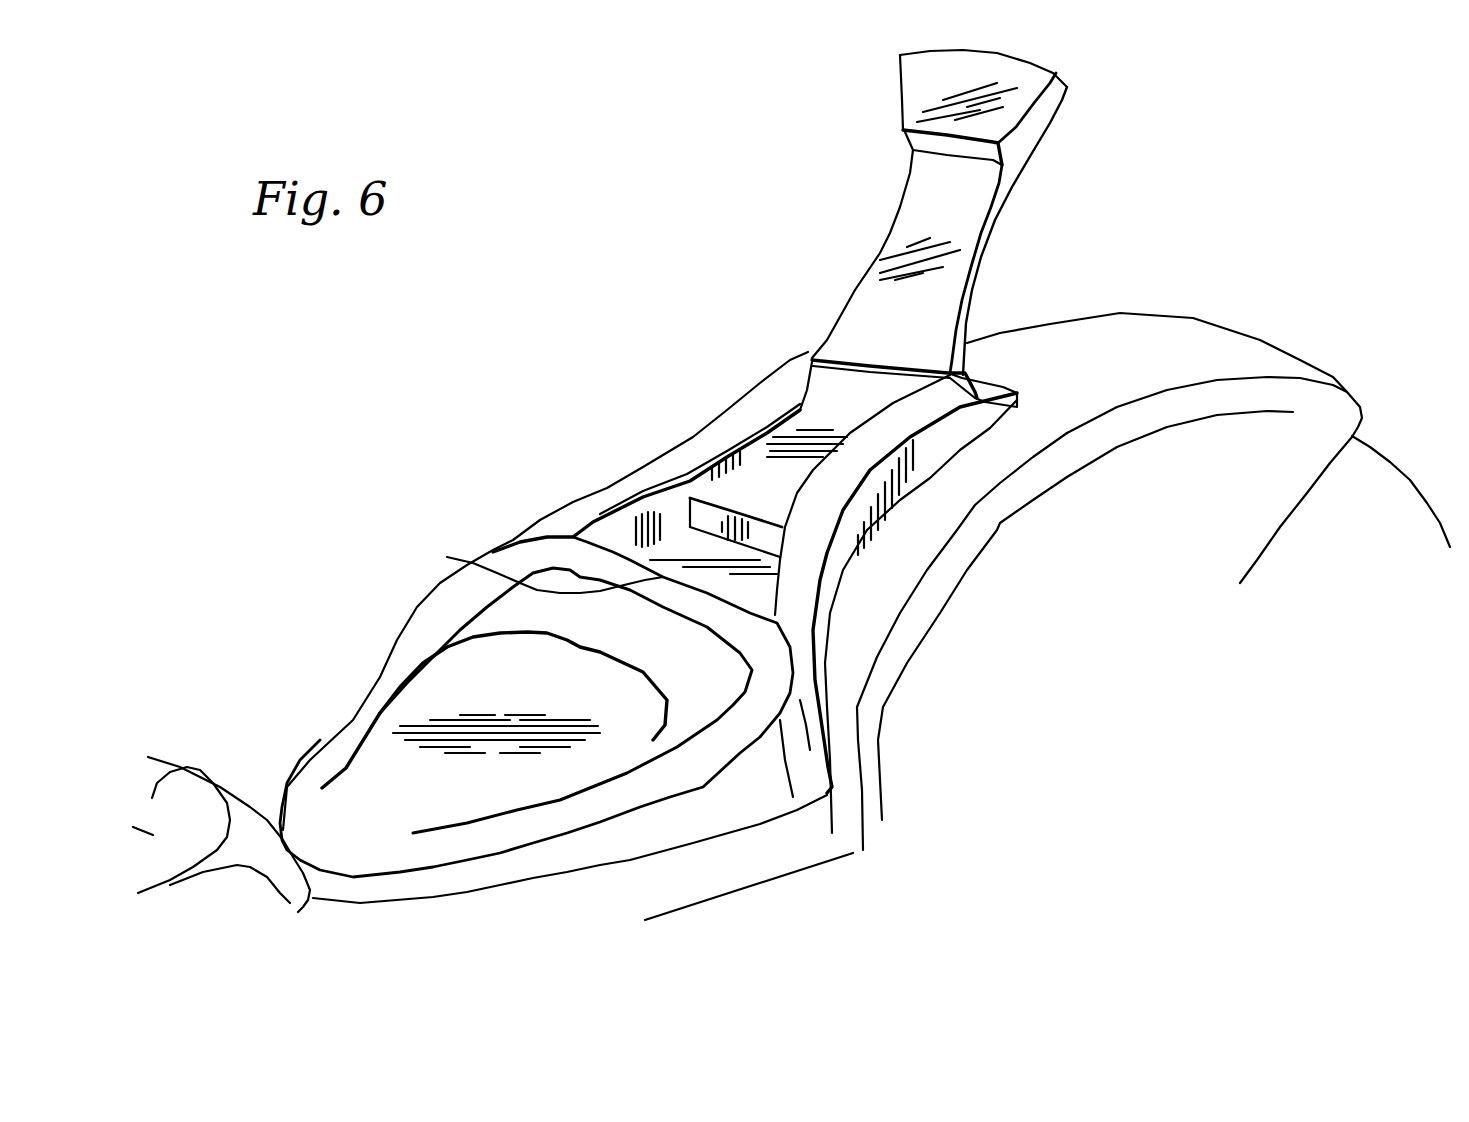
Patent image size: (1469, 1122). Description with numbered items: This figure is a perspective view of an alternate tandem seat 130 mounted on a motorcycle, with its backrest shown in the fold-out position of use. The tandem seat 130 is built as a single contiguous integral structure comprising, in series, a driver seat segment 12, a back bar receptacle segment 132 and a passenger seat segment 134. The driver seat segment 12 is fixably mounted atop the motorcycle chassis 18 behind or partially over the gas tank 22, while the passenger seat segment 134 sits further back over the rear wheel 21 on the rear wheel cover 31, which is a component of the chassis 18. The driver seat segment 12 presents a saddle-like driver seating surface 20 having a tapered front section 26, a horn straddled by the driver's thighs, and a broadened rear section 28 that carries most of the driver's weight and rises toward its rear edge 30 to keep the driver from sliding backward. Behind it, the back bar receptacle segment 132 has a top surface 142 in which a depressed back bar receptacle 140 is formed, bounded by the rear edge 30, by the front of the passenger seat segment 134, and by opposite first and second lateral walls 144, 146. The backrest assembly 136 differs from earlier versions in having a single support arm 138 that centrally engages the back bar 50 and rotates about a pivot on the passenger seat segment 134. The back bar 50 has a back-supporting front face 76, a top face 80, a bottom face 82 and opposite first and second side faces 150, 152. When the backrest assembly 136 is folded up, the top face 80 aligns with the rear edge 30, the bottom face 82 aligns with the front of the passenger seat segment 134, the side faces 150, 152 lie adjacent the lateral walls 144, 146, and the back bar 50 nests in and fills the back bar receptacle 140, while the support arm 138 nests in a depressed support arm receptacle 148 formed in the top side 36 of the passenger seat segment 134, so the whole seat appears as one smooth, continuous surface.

The driver seat segment 12 is at (539, 707).
The motorcycle chassis 18 is at (783, 884).
The driver seating surface 20 is at (475, 687).
The rear wheel 21 is at (1402, 475).
The gas tank 22 is at (224, 830).
The tapered front section 26 is at (216, 806).
The broadened rear section 28 is at (570, 831).
The rear edge 30 is at (564, 687).
The rear wheel cover 31 is at (1164, 442).
The top side 36 is at (1163, 435).
The back bar 50 is at (1074, 108).
The back-supporting front face 76 is at (914, 83).
The top face 80 is at (1025, 61).
The bottom face 82 is at (910, 148).
The tandem seat 130 is at (650, 258).
The back bar receptacle segment 132 is at (901, 584).
The passenger seat segment 134 is at (968, 616).
The backrest assembly 136 is at (1052, 269).
The support arm 138 is at (988, 254).
The back bar receptacle 140 is at (637, 516).
The top surface 142 is at (625, 481).
The first lateral wall 144 is at (933, 641).
The second lateral wall 146 is at (545, 591).
The support arm receptacle 148 is at (819, 393).
The first side face 150 is at (1066, 231).
The second side face 152 is at (846, 92).